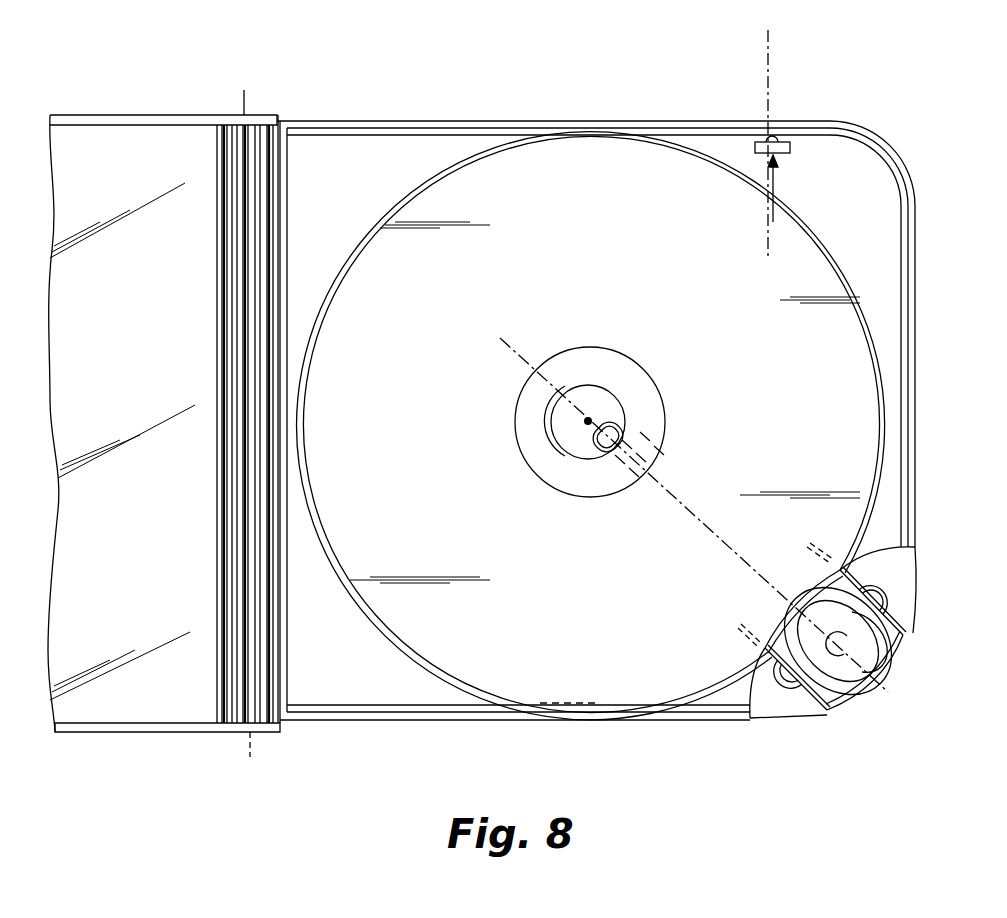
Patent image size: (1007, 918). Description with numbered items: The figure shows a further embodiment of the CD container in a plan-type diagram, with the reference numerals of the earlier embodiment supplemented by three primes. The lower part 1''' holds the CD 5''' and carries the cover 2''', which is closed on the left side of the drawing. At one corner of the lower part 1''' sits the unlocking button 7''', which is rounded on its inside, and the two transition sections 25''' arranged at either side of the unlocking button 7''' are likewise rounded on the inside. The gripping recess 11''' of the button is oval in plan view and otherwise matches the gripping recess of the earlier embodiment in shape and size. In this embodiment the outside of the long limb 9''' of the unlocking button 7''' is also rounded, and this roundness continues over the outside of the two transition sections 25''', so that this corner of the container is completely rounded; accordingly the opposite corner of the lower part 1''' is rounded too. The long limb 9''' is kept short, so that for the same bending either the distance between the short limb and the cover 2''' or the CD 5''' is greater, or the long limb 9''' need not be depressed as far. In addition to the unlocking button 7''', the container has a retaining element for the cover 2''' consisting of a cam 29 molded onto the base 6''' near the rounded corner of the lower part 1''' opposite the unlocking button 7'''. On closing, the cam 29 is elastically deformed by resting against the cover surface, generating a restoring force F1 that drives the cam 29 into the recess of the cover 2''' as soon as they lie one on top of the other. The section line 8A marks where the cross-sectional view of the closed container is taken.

The lower part 1''' is at (596, 458).
The cover 2''' is at (164, 446).
The CD 5''' is at (650, 426).
The base 6''' is at (872, 129).
The unlocking button 7''' is at (860, 629).
The long limb 9''' is at (845, 675).
The gripping recess 11''' is at (841, 706).
The transition sections 25''' is at (878, 673).
The cam 29 is at (771, 137).
The restoring force F1 is at (757, 212).
The section line 8A is at (708, 260).